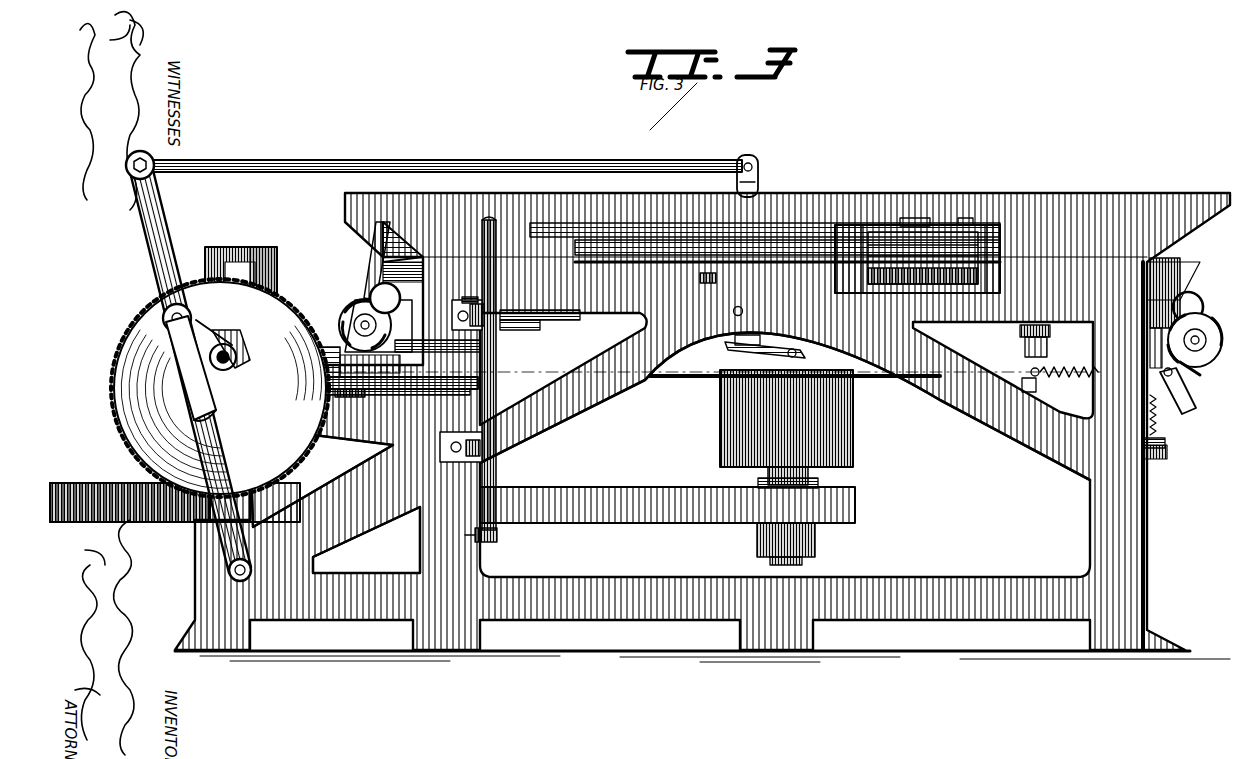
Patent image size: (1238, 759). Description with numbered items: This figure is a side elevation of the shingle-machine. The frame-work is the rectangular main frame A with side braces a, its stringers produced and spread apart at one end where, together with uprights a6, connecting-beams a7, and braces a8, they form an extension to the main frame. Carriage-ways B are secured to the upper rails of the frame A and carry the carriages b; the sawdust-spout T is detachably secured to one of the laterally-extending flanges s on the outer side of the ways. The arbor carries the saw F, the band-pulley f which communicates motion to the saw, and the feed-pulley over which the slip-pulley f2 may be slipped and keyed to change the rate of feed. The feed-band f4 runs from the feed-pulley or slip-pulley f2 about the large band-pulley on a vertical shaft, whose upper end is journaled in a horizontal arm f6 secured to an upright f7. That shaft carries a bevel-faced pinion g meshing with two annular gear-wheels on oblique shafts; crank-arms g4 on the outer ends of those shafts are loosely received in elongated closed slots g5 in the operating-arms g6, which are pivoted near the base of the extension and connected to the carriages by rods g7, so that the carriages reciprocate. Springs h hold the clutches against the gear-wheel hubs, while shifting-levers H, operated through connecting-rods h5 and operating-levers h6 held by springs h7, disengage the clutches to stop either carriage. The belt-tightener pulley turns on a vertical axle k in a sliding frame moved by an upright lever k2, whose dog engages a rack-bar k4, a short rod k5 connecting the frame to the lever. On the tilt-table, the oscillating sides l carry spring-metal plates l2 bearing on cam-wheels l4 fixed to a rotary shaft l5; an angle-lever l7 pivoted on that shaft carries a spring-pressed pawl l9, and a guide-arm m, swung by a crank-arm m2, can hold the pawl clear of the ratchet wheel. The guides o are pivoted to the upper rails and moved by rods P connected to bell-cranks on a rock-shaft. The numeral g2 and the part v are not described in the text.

The main frame A is at (702, 427).
The carriage-ways B is at (500, 210).
The side braces a is at (595, 406).
The uprights a6 is at (309, 477).
The connecting-beams a7 is at (355, 400).
The braces a8 is at (366, 534).
The rods g7 is at (454, 167).
The operating-arms g6 is at (148, 244).
The bevel-faced pinion g is at (205, 280).
The crank-arms g4 is at (222, 340).
The elongated closed slots g5 is at (185, 353).
The ratchet wheel g2 is at (118, 408).
The band-pulley f is at (853, 432).
The slip-pulley f2 is at (815, 530).
The feed-band f4 is at (155, 520).
The horizontal arm f6 is at (241, 261).
The upright f7 is at (277, 278).
The springs h is at (327, 362).
The shifting-levers H is at (380, 396).
The connecting-rods h5 is at (350, 404).
The operating-levers h6 is at (1034, 368).
The springs h7 is at (1085, 380).
The vertical axle k is at (510, 535).
The upright lever k2 is at (500, 300).
The rack-bar k4 is at (466, 290).
The short rod k5 is at (485, 545).
The oscillating sides l is at (1175, 268).
The spring-metal plates l2 is at (1222, 330).
The cam-wheels l4 is at (350, 315).
The rotary shaft l5 is at (345, 342).
The angle-lever l7 is at (372, 250).
The spring-pressed pawl l9 is at (408, 343).
The guide-arm m is at (1200, 397).
The crank-arm m2 is at (1161, 421).
The guides o is at (632, 236).
The flanges s is at (745, 238).
The saw F is at (712, 250).
The sawdust-spout T is at (917, 255).
The carriages b is at (923, 258).
The rods P is at (795, 355).
The inclined plate v is at (403, 252).